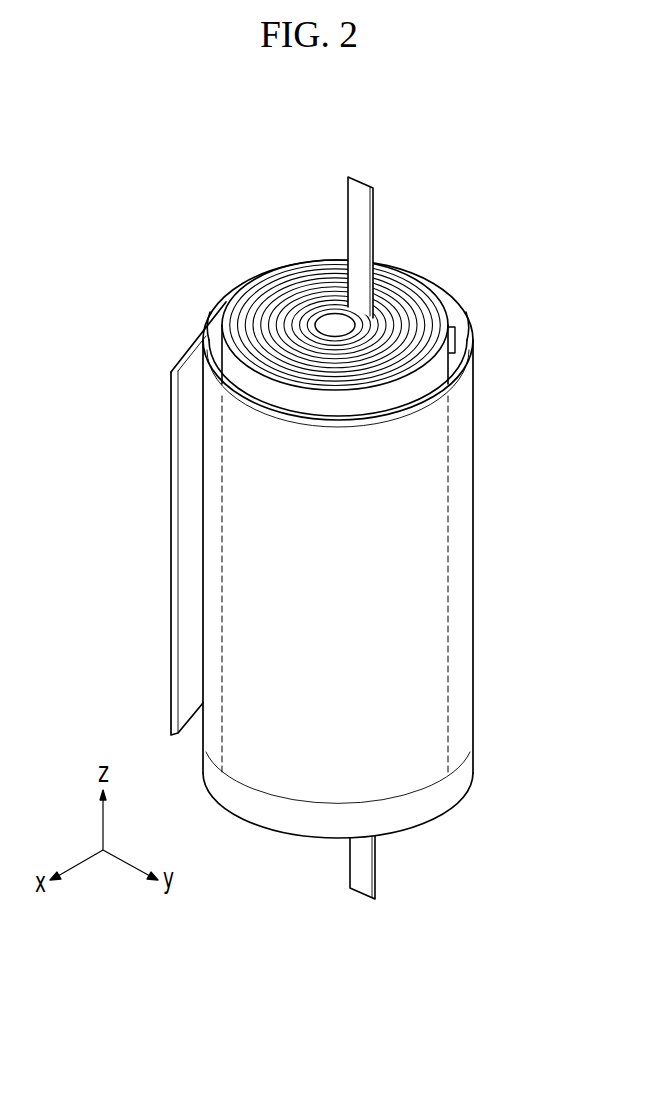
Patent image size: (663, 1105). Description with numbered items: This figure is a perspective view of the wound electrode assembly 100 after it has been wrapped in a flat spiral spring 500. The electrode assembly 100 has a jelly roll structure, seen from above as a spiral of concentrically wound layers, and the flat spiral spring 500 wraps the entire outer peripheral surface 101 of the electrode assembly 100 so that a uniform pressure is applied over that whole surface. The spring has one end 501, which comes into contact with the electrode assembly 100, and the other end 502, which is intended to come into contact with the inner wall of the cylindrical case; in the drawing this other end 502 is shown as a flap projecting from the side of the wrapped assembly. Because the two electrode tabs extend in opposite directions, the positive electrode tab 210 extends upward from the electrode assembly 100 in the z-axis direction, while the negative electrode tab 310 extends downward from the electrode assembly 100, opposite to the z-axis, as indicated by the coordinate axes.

The electrode assembly 100 is at (210, 208).
The outer peripheral surface 101 is at (422, 378).
The positive electrode tab 210 is at (375, 207).
The negative electrode tab 310 is at (358, 875).
The flat spiral spring 500 is at (460, 558).
The one end 501 is at (462, 322).
The other end 502 is at (172, 505).